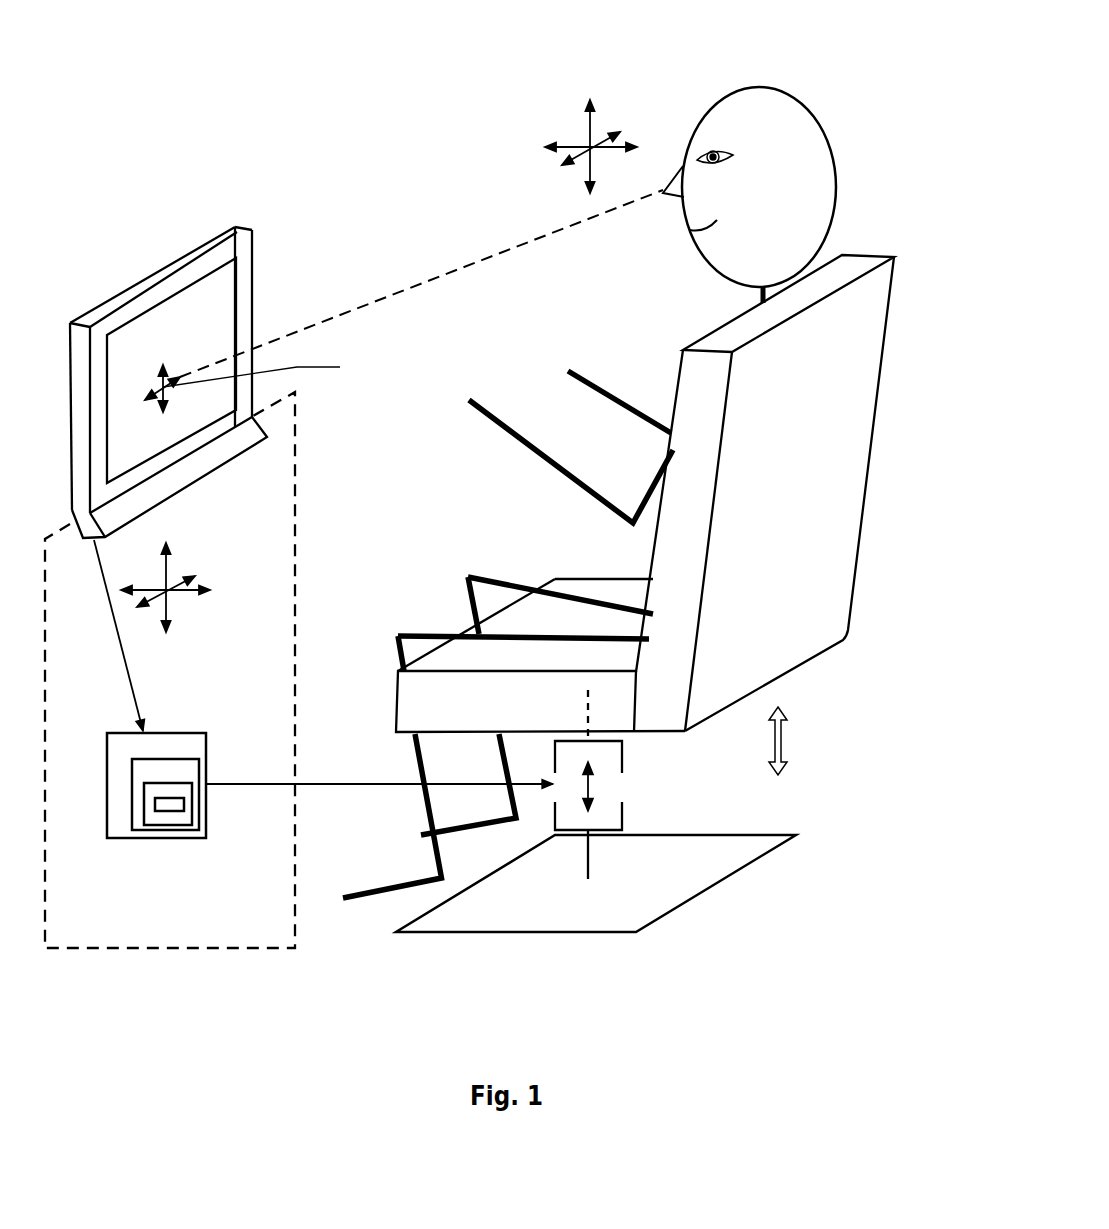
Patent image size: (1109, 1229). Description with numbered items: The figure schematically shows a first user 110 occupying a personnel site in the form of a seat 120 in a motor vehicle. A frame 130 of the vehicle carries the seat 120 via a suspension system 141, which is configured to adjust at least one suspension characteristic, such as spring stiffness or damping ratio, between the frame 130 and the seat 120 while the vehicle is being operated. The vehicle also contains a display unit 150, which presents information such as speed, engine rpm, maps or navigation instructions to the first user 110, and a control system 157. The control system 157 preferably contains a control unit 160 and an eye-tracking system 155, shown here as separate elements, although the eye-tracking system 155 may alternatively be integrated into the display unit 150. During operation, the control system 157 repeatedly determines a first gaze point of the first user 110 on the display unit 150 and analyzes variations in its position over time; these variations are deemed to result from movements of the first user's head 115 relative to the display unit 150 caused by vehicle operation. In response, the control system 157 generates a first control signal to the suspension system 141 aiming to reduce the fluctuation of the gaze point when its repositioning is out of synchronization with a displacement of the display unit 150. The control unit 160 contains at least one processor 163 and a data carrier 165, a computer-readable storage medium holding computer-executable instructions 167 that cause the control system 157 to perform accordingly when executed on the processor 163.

The first user 110 is at (440, 192).
The first user's head 115 is at (800, 189).
The seat 120 is at (679, 493).
The frame 130 is at (616, 898).
The suspension system 141 is at (688, 784).
The display unit 150 is at (236, 347).
The eye-tracking system 155 is at (174, 477).
The control system 157 is at (299, 703).
The control unit 160 is at (162, 838).
The processor 163 is at (186, 836).
The data carrier 165 is at (204, 831).
The computer-executable instructions 167 is at (214, 822).